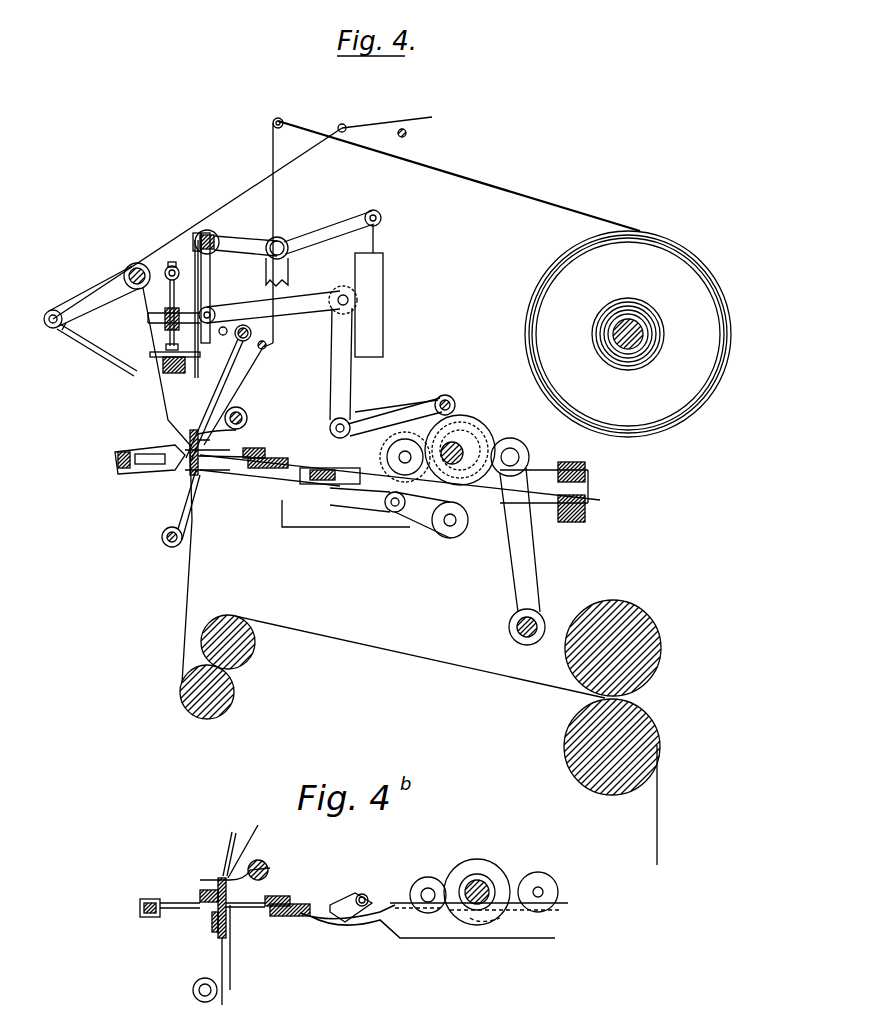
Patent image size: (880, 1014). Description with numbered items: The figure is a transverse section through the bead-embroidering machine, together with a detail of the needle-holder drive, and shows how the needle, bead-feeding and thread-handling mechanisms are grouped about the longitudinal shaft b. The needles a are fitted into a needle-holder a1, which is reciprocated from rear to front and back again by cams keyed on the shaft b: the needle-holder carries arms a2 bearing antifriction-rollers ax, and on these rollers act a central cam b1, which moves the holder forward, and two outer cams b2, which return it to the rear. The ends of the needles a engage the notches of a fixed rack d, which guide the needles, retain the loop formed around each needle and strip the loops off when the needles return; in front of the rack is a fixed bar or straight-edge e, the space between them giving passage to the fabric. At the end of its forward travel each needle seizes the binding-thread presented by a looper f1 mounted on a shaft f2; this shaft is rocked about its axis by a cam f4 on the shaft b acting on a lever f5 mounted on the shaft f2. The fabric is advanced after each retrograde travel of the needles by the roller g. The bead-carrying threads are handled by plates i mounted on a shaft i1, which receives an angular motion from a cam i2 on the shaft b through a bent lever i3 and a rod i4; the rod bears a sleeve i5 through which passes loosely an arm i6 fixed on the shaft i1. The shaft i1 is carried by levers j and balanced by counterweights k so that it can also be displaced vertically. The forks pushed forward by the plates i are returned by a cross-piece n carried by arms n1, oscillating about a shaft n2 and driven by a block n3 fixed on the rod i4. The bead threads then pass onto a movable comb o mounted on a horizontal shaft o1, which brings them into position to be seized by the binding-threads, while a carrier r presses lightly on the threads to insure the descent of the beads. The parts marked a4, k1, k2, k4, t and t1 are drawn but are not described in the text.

In FIG. 4, the needles a is at (222, 454).
In FIG. 4B, the needles a is at (250, 908).
In FIG. 4, the needle-holder a1 is at (262, 450).
In FIG. 4B, the needle-holder a1 is at (300, 898).
In FIG. 4, the arms a2 is at (295, 472).
In FIG. 4B, the arms a2 is at (368, 892).
In FIG. 4, the pulley a4 is at (415, 447).
In FIG. 4, the antifriction-rollers ax is at (525, 448).
In FIG. 4B, the antifriction-rollers ax is at (435, 885).
In FIG. 4, the longitudinal shaft b is at (458, 453).
In FIG. 4, the central cam b1 is at (398, 440).
In FIG. 4B, the central cam b1 is at (545, 885).
In FIG. 4, the outer cams b2 is at (485, 425).
In FIG. 4B, the outer cams b2 is at (500, 880).
In FIG. 4B, the fixed rack d is at (232, 930).
In FIG. 4B, the fixed bar or straight-edge e is at (215, 875).
In FIG. 4, the looper f1 is at (144, 448).
In FIG. 4B, the looper f1 is at (160, 830).
In FIG. 4, the looper shaft f2 is at (134, 468).
In FIG. 4B, the looper shaft f2 is at (158, 920).
In FIG. 4, the cam f4 is at (470, 508).
In FIG. 4, the lever f5 is at (228, 475).
In FIG. 4, the roller or shaft g is at (250, 656).
In FIG. 4, the plates i is at (198, 364).
In FIG. 4, the shaft i1 is at (208, 235).
In FIG. 4, the cam i2 is at (462, 418).
In FIG. 4, the bent lever i3 is at (353, 420).
In FIG. 4, the rod i4 is at (298, 302).
In FIG. 4, the sleeve i5 is at (212, 311).
In FIG. 4, the arm i6 is at (211, 276).
In FIG. 4, the levers j is at (294, 236).
In FIG. 4, the counterweights k is at (369, 291).
In FIG. 4, the block k1 is at (160, 360).
In FIG. 4, the plate k2 is at (155, 355).
In FIG. 4, the rod k4 is at (182, 320).
In FIG. 4, the cross-piece n is at (168, 352).
In FIG. 4, the arms n1 is at (175, 290).
In FIG. 4, the shaft n2 is at (170, 268).
In FIG. 4, the block n3 is at (167, 310).
In FIG. 4, the movable comb o is at (188, 437).
In FIG. 4B, the movable comb o is at (205, 905).
In FIG. 4, the horizontal shaft o1 is at (246, 414).
In FIG. 4, the carrier r is at (130, 372).
In FIG. 4, the pivot t is at (247, 328).
In FIG. 4, the rod t1 is at (222, 388).